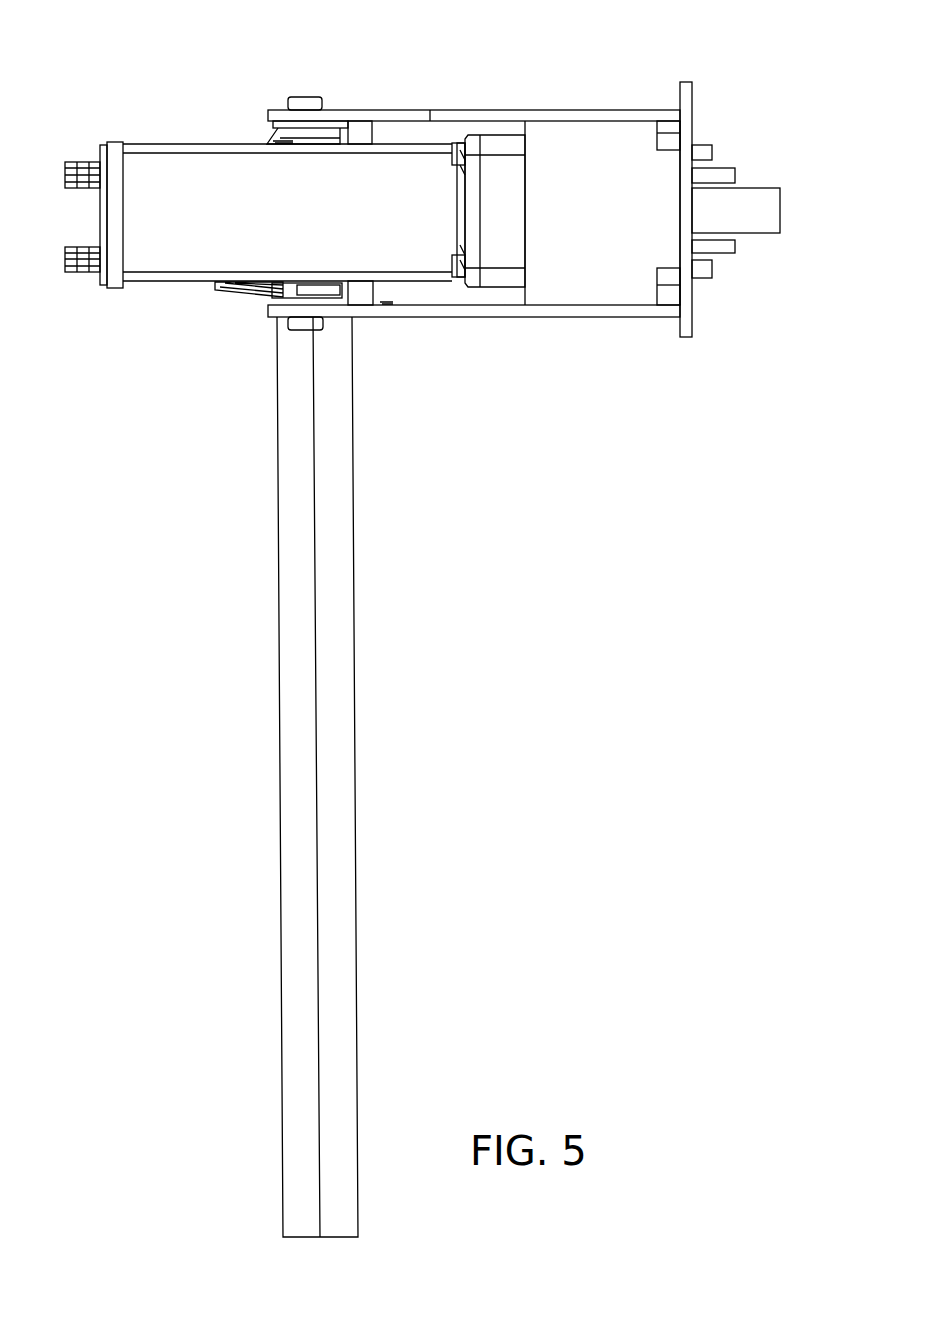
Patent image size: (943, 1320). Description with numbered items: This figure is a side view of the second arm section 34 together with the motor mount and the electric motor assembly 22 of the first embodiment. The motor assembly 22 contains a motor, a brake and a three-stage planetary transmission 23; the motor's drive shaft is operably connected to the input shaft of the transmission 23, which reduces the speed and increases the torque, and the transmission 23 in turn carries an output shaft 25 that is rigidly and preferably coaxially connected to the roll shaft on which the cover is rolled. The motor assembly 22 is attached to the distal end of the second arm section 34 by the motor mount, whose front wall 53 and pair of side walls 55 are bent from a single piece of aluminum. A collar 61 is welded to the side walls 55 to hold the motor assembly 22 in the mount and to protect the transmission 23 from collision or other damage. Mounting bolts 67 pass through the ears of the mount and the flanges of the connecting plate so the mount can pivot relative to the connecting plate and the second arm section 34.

The motor assembly 22 is at (242, 188).
The three-stage planetary transmission 23 is at (505, 227).
The output shaft 25 is at (762, 210).
The second arm section 34 is at (342, 695).
The front wall 53 is at (692, 135).
The side walls 55 is at (530, 108).
The collar 61 is at (622, 222).
The mounting bolts 67 is at (310, 100).